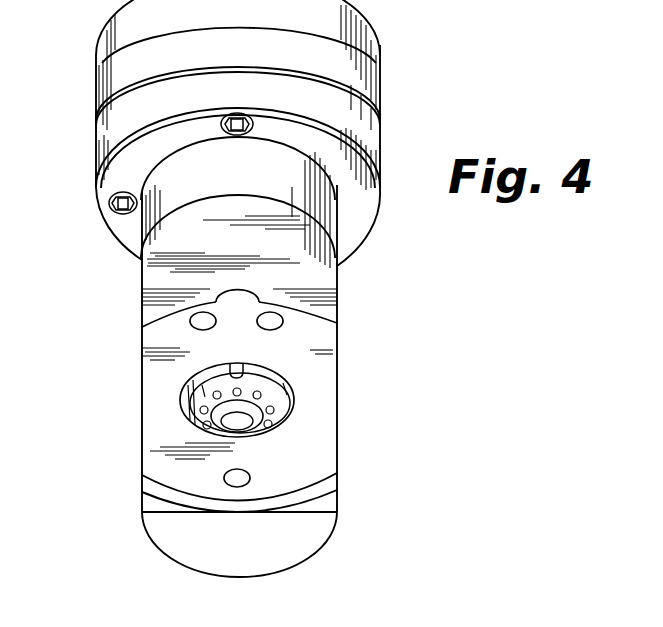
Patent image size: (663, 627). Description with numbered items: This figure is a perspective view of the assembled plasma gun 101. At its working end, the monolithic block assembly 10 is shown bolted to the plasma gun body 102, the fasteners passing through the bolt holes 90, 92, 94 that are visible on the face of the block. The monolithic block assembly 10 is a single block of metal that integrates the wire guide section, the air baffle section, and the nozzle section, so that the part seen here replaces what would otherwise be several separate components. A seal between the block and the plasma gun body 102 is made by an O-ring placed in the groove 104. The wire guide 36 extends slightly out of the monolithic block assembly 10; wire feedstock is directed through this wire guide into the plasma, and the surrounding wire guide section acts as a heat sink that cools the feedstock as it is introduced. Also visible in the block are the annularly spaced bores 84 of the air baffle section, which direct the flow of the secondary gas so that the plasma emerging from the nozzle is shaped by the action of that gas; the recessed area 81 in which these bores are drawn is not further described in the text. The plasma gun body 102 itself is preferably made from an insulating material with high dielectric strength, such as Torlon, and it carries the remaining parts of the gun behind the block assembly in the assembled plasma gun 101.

The monolithic block assembly 10 is at (315, 425).
The wire guide 36 is at (243, 370).
The recess 81 is at (184, 400).
The annularly spaced bores 84 is at (273, 405).
The bolt hole 90 is at (168, 297).
The bolt hole 92 is at (272, 319).
The bolt hole 94 is at (237, 478).
The assembled plasma gun 101 is at (290, 288).
The plasma gun body 102 is at (205, 320).
The groove 104 is at (197, 377).